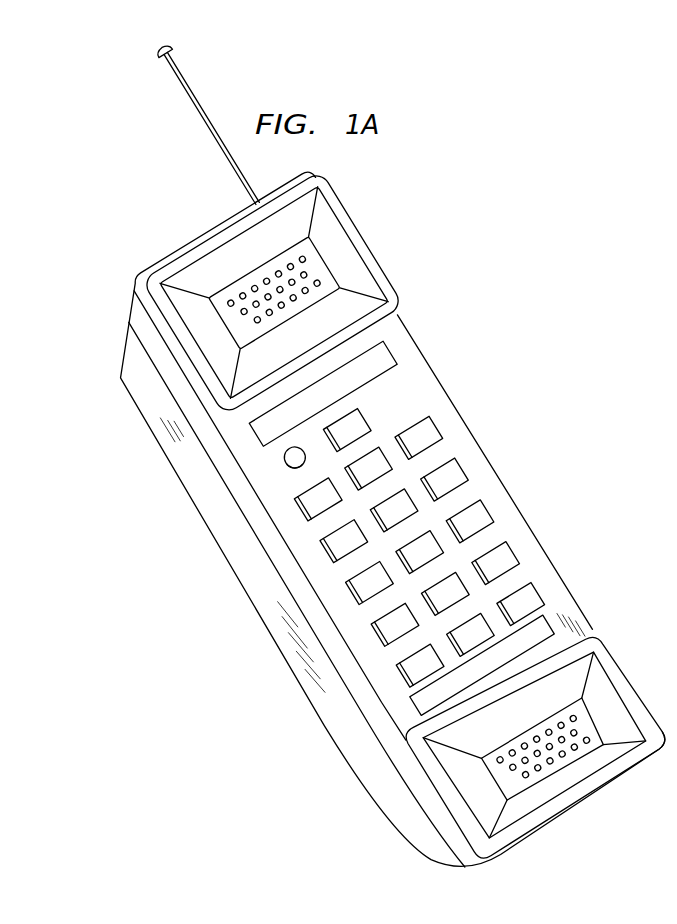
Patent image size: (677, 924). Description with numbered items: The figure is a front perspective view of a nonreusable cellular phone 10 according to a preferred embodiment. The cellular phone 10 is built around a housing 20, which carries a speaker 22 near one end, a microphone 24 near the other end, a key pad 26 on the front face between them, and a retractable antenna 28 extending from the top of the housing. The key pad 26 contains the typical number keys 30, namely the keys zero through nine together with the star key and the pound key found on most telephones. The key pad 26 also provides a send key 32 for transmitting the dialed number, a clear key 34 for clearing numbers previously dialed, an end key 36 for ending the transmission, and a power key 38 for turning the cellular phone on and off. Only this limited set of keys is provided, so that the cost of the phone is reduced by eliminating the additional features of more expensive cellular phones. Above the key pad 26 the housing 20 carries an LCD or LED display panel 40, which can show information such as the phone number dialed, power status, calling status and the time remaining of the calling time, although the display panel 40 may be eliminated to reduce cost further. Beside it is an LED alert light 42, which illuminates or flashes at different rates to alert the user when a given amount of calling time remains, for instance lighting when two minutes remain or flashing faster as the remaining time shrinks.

The nonreusable cellular phone 10 is at (167, 685).
The housing 20 is at (581, 603).
The speaker 22 is at (333, 240).
The microphone 24 is at (590, 722).
The key pad 26 is at (442, 530).
The retractable antenna 28 is at (193, 94).
The number keys 30 is at (540, 597).
The send key 32 is at (318, 499).
The clear key 34 is at (369, 468).
The end key 36 is at (419, 437).
The power key 38 is at (347, 430).
The display panel 40 is at (382, 352).
The alert light 42 is at (282, 458).